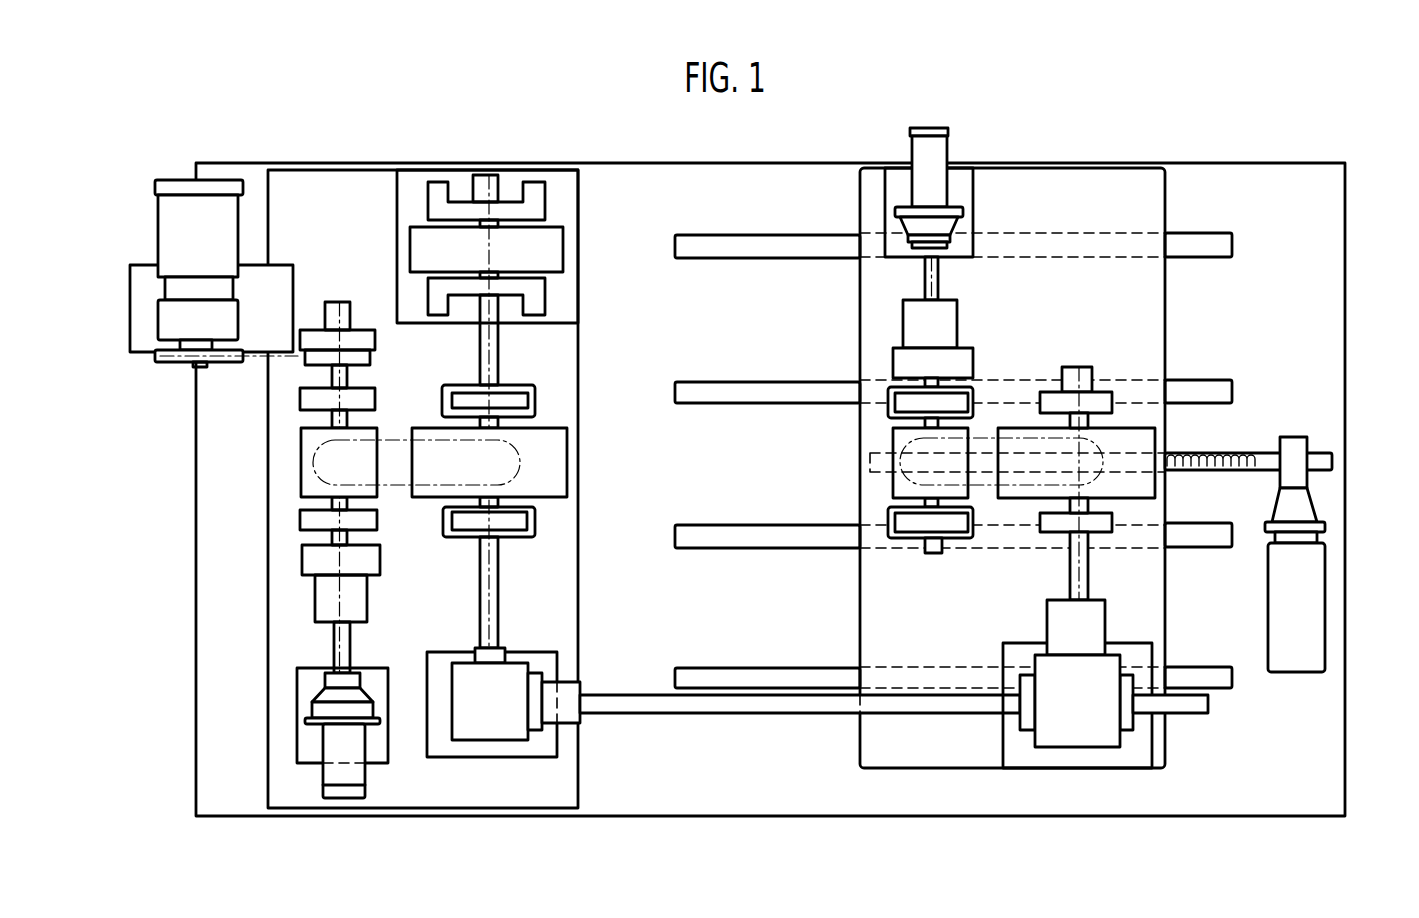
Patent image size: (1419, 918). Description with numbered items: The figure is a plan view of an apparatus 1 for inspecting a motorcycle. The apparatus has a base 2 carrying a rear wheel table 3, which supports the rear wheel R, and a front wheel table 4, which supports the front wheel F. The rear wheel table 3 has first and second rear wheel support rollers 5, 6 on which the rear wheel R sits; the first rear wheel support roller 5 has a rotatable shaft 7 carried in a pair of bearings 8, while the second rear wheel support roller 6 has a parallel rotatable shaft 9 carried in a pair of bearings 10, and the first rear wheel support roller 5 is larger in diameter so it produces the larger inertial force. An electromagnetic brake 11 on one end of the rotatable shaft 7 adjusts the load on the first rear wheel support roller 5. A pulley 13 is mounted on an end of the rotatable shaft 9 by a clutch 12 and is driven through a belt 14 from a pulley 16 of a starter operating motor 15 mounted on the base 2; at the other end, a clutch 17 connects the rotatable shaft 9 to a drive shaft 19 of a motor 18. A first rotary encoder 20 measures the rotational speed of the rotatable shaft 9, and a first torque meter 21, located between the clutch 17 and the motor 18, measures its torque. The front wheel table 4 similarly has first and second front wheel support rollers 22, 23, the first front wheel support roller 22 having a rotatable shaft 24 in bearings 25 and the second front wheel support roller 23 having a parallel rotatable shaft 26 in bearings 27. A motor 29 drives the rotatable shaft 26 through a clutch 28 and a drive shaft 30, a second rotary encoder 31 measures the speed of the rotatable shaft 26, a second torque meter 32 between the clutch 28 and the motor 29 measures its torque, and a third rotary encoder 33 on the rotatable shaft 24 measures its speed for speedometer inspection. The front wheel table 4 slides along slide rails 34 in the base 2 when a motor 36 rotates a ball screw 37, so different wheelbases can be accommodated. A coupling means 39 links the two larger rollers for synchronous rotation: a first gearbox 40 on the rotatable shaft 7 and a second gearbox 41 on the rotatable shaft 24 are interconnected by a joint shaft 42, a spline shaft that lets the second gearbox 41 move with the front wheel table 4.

The apparatus for inspecting a motorcycle 1 is at (1314, 108).
The base 2 is at (1228, 162).
The rear wheel table 3 is at (352, 190).
The front wheel table 4 is at (1072, 183).
The first rear wheel support roller 5 is at (545, 438).
The second rear wheel support roller 6 is at (312, 438).
The rotatable shaft 7 is at (500, 345).
The bearings 8 is at (515, 400).
The rotatable shaft 9 is at (352, 375).
The bearings 10 is at (310, 400).
The electromagnetic brake 11 is at (550, 240).
The clutch 12 is at (355, 340).
The pulley 13 is at (370, 358).
The belt 14 is at (258, 362).
The starter operating motor 15 is at (180, 230).
The pulley 16 is at (163, 362).
The clutch 17 is at (360, 560).
The motor 18 is at (355, 778).
The drive shaft 19 is at (352, 640).
The first rotary encoder 20 is at (338, 302).
The first torque meter 21 is at (322, 598).
The first front wheel support roller 22 is at (1140, 436).
The second front wheel support roller 23 is at (900, 435).
The rotatable shaft 24 is at (1100, 430).
The bearings 25 is at (1098, 395).
The rotatable shaft 26 is at (910, 365).
The bearings 27 is at (960, 400).
The clutch 28 is at (922, 356).
The motor 29 is at (950, 152).
The drive shaft 30 is at (940, 280).
The second rotary encoder 31 is at (935, 553).
The second torque meter 32 is at (915, 312).
The third rotary encoder 33 is at (1075, 370).
The slide rails 34 is at (728, 240).
The motor 36 is at (1317, 613).
The ball screw 37 is at (1195, 472).
The coupling means 39 is at (703, 733).
The first gearbox 40 is at (505, 727).
The second gearbox 41 is at (1085, 730).
The joint shaft 42 is at (796, 714).
The rear wheel R is at (530, 455).
The front wheel F is at (875, 475).